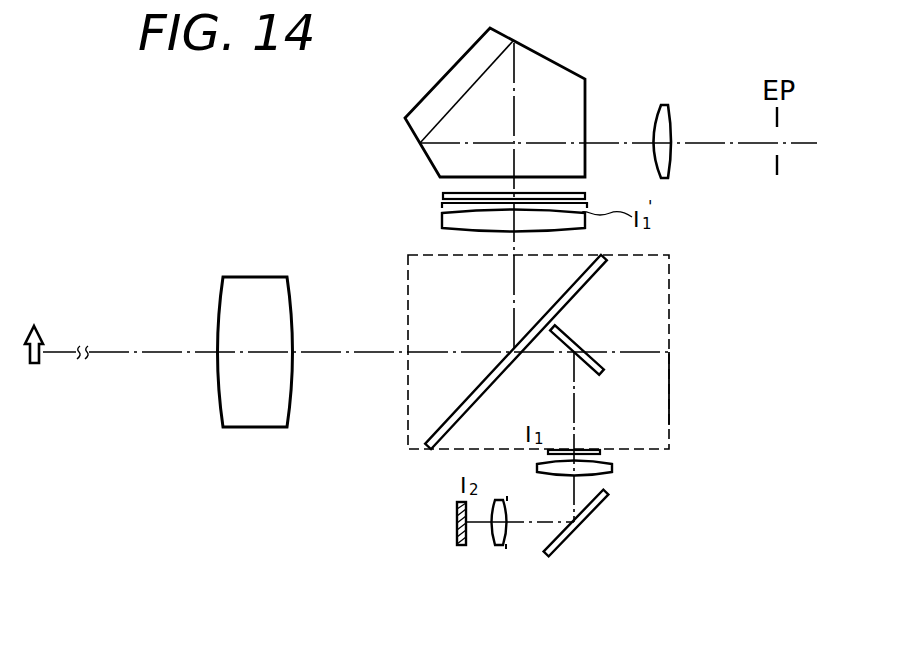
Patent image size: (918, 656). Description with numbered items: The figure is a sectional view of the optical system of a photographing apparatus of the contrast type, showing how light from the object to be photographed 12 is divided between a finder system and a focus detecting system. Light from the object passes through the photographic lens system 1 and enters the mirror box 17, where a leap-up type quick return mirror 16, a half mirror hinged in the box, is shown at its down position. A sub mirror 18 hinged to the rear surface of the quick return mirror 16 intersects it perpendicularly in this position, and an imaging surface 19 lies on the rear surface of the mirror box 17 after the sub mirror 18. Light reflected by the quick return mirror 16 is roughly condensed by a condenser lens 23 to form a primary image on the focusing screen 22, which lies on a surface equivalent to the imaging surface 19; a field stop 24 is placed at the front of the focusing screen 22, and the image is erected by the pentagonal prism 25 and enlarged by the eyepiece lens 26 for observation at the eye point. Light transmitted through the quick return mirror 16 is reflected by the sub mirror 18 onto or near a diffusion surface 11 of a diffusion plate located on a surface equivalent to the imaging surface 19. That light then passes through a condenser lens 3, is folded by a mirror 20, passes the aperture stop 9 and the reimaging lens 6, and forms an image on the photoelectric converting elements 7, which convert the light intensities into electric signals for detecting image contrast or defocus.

The photographic lens system 1 is at (228, 277).
The condenser lens 3 is at (612, 468).
The reimaging lens 6 is at (500, 548).
The photoelectric converting elements 7 is at (458, 547).
The aperture stop 9 is at (507, 549).
The diffusion surface 11 is at (590, 442).
The object to be photographed 12 is at (37, 325).
The quick return mirror 16 is at (612, 267).
The mirror box 17 is at (407, 300).
The sub mirror 18 is at (585, 332).
The imaging surface 19 is at (670, 362).
The mirror 20 is at (592, 515).
The focusing screen 22 is at (445, 192).
The condenser lens 23 is at (442, 220).
The field stop 24 is at (440, 207).
The pentagonal prism 25 is at (553, 58).
The eyepiece lens 26 is at (663, 105).